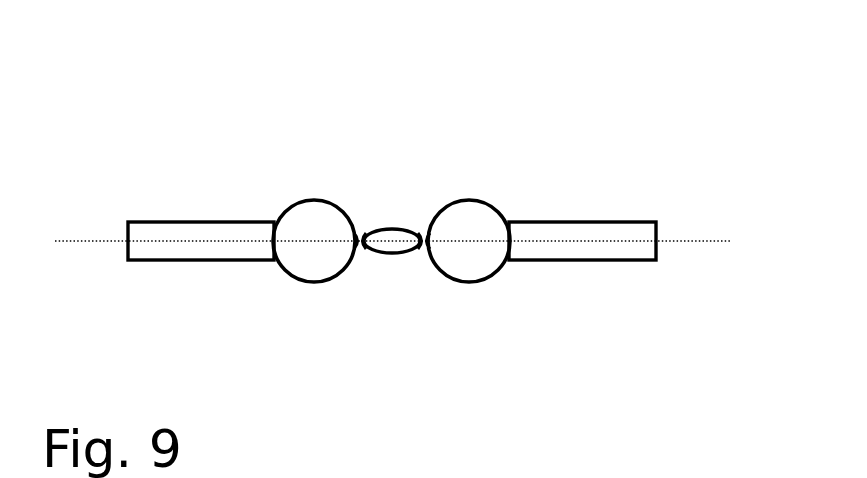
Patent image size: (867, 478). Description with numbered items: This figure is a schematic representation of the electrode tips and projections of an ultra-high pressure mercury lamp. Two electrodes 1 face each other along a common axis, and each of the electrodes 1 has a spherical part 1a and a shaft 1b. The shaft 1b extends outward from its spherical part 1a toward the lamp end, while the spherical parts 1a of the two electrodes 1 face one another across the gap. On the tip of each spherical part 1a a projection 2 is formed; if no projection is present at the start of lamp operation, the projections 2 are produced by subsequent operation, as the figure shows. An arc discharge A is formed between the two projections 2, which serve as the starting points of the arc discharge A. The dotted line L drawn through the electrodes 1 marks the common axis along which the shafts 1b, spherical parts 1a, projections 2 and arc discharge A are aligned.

The electrode 1 is at (392, 243).
The spherical part 1a is at (391, 277).
The shaft 1b is at (392, 288).
The projection 2 is at (394, 208).
The arc discharge A is at (392, 193).
The axis line L is at (382, 242).